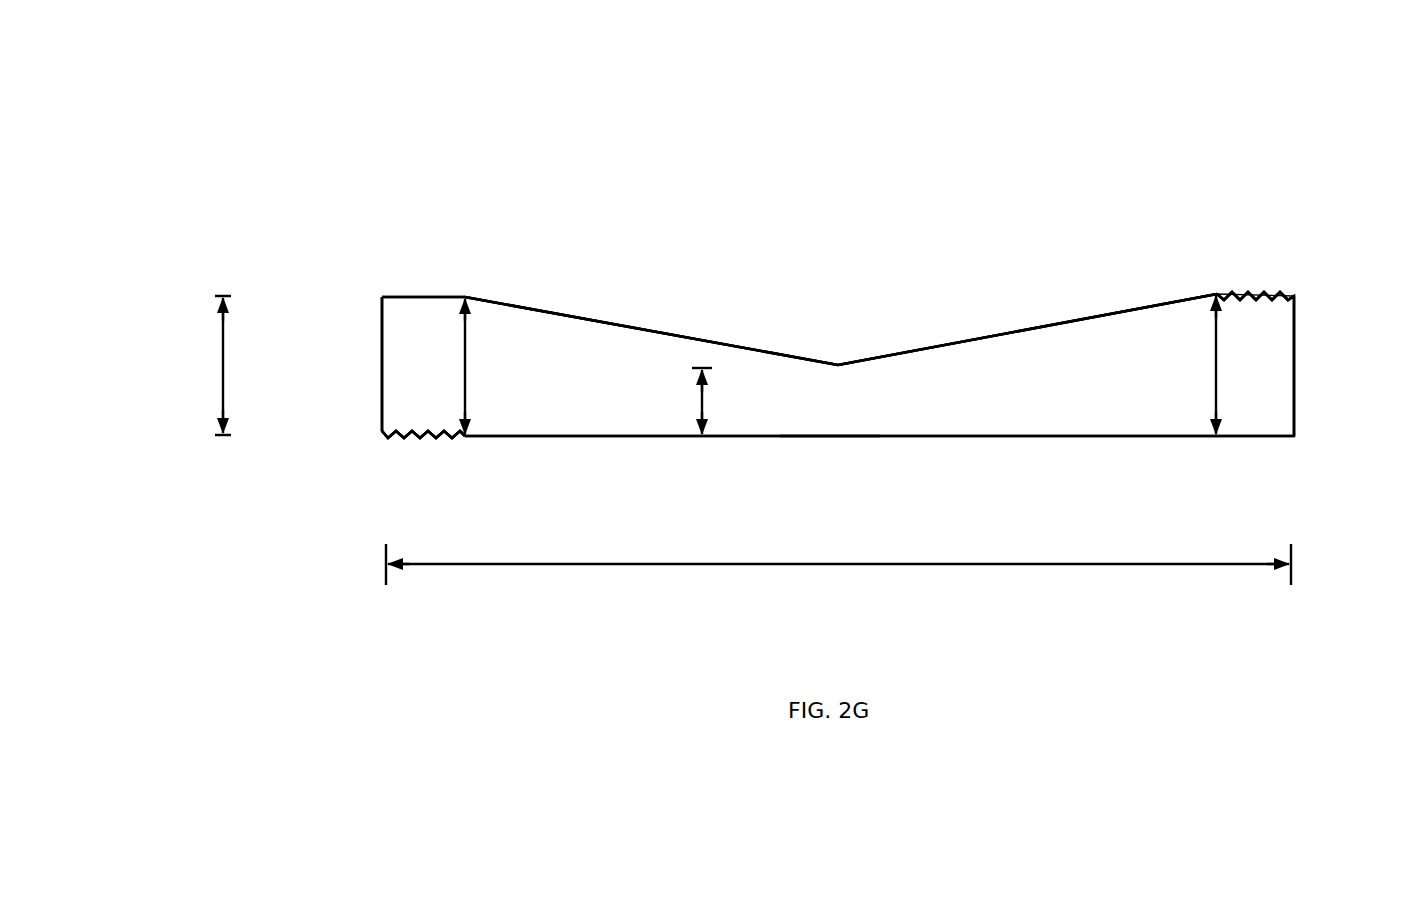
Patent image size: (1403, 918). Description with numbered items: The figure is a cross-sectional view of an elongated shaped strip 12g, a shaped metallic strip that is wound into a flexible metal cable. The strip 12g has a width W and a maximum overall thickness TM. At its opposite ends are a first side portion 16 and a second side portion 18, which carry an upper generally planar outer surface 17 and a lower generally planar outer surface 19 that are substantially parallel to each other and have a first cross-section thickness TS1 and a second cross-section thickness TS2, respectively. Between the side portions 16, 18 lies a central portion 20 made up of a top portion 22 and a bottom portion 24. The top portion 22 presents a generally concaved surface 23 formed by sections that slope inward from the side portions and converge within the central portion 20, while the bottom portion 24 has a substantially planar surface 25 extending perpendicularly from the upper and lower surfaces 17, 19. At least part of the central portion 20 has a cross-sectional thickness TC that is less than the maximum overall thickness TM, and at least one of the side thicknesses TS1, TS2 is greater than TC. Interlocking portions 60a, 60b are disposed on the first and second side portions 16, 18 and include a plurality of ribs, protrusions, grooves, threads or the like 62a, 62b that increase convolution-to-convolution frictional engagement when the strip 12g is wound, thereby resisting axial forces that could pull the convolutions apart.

The elongated shaped strip 12g is at (291, 170).
The first side portion 16 is at (1248, 188).
The upper generally planar outer surface 17 is at (1298, 373).
The second side portion 18 is at (411, 246).
The lower generally planar outer surface 19 is at (380, 352).
The central portion 20 is at (841, 265).
The top portion 22 is at (747, 347).
The concaved surface 23 is at (941, 343).
The bottom portion 24 is at (958, 435).
The planar surface 25 is at (824, 440).
The interlocking portion 60a is at (1288, 245).
The interlocking portion 60b is at (391, 481).
The ribs, protrusions, grooves, or threads 62a is at (1233, 290).
The ribs, protrusions, grooves, or threads 62b is at (425, 437).
The maximum overall thickness TM is at (220, 360).
The first cross-section thickness TS1 is at (1215, 373).
The second cross-section thickness TS2 is at (466, 375).
The cross-sectional thickness of the central portion TC is at (700, 397).
The width W is at (945, 565).